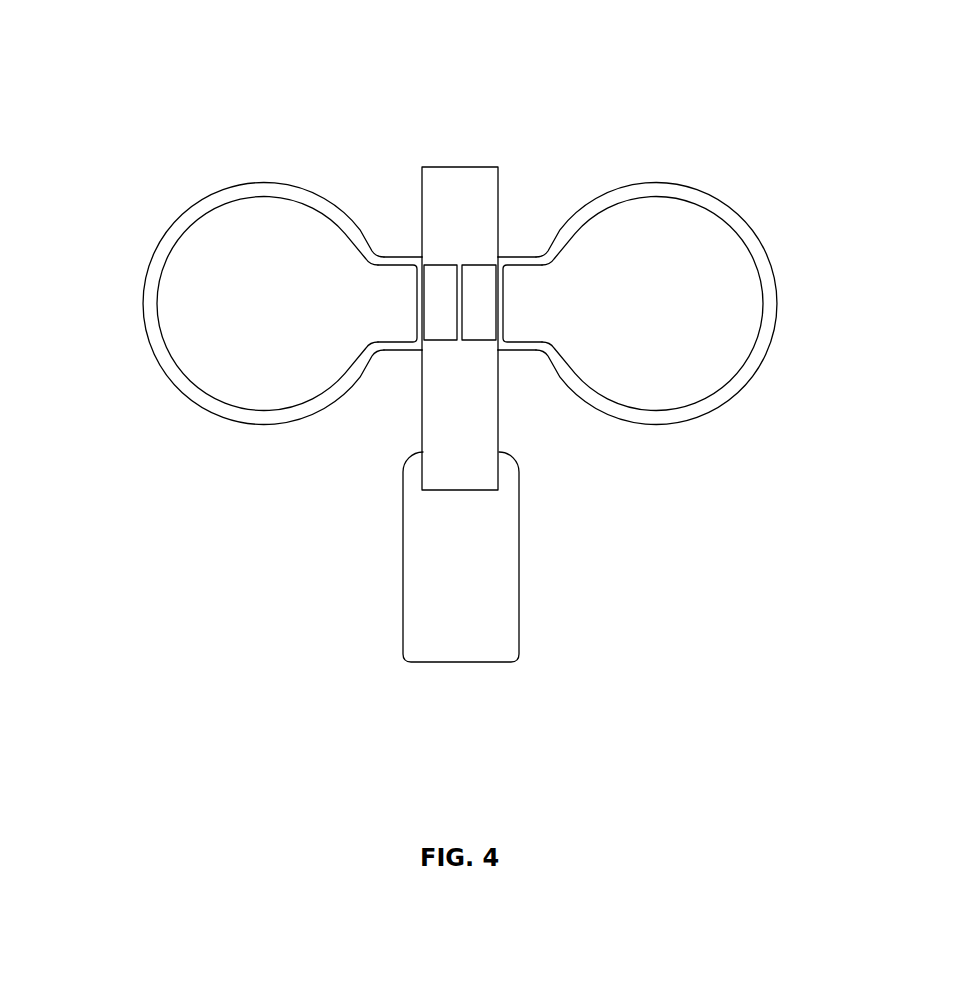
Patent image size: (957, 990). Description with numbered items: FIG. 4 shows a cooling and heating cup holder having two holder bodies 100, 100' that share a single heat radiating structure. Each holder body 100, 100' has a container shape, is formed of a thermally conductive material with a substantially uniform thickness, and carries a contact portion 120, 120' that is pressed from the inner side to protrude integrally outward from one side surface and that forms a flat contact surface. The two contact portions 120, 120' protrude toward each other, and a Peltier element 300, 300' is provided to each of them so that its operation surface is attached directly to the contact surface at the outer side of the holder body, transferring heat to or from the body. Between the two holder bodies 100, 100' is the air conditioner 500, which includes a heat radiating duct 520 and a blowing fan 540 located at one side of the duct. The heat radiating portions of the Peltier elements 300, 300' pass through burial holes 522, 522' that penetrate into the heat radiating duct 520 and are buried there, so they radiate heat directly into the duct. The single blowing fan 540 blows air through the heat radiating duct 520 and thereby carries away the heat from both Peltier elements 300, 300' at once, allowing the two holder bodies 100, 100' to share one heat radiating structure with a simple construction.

The holder body 100 is at (218, 292).
The holder body 100' is at (702, 292).
The contact portion 120 is at (378, 355).
The contact portion 120' is at (545, 356).
The Peltier element 300 is at (417, 205).
The Peltier element 300' is at (504, 205).
The air conditioner 500 is at (448, 439).
The heat radiating duct 520 is at (480, 433).
The burial hole 522 is at (381, 251).
The burial hole 522' is at (539, 251).
The blowing fan 540 is at (388, 580).